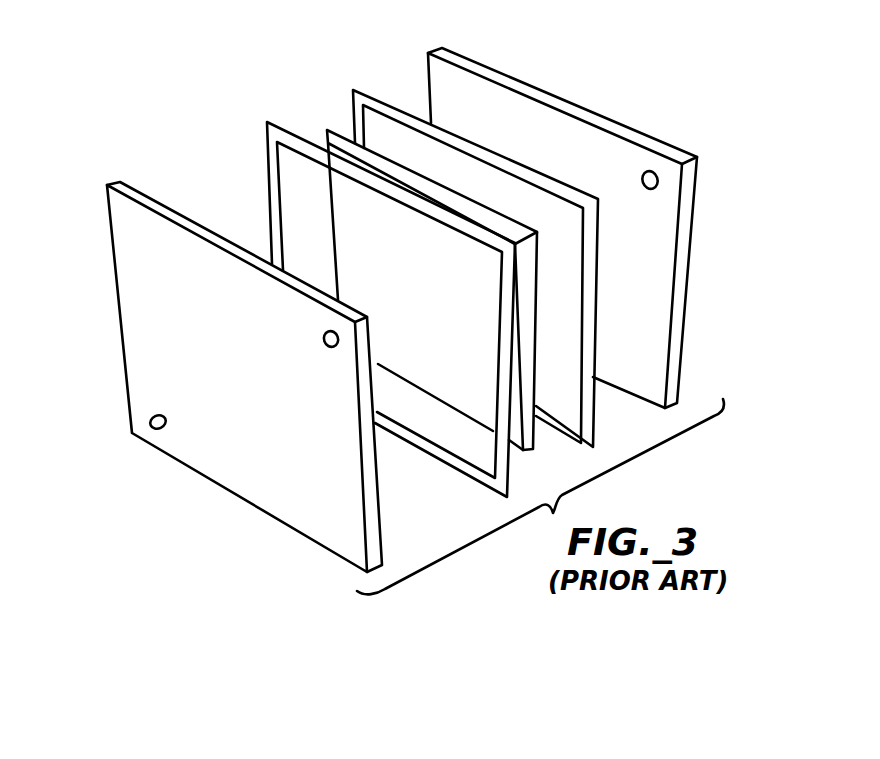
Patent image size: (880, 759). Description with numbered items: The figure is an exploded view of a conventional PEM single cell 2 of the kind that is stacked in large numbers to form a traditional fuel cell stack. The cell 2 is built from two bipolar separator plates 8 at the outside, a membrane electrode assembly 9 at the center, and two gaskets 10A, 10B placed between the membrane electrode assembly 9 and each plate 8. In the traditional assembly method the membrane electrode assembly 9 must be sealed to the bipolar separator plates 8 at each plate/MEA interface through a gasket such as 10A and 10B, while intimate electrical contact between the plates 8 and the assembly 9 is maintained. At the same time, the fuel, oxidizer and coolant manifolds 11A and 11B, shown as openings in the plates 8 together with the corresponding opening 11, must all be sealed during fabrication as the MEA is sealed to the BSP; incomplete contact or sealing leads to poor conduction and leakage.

The individual cell 2 is at (117, 45).
The bipolar separator plate 8 is at (113, 183).
The membrane electrode assembly 9 is at (327, 128).
The gasket 10A is at (267, 121).
The gasket 10B is at (353, 90).
The hole 11 is at (338, 331).
The manifold 11A is at (150, 421).
The manifold 11B is at (656, 172).